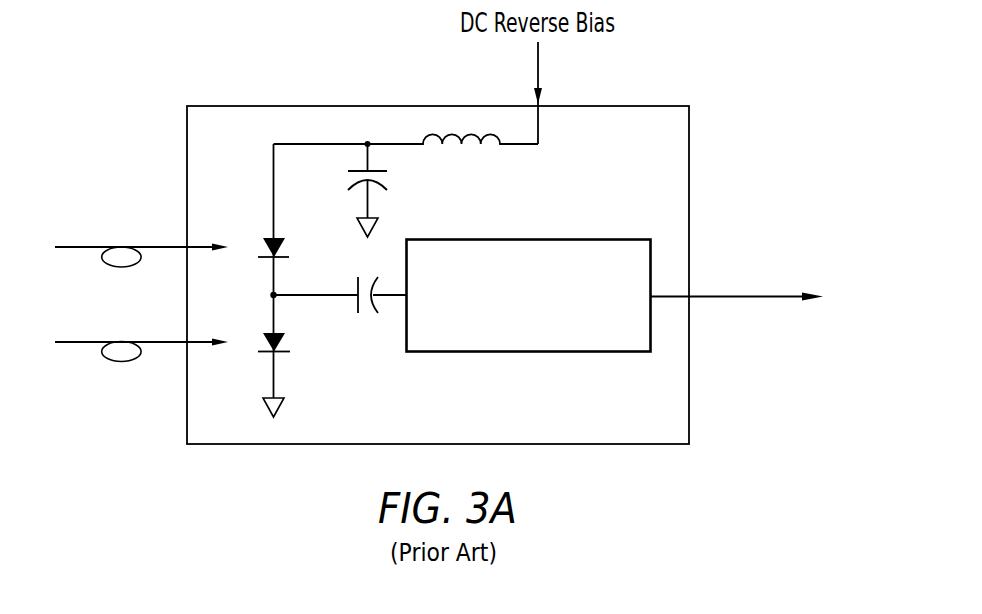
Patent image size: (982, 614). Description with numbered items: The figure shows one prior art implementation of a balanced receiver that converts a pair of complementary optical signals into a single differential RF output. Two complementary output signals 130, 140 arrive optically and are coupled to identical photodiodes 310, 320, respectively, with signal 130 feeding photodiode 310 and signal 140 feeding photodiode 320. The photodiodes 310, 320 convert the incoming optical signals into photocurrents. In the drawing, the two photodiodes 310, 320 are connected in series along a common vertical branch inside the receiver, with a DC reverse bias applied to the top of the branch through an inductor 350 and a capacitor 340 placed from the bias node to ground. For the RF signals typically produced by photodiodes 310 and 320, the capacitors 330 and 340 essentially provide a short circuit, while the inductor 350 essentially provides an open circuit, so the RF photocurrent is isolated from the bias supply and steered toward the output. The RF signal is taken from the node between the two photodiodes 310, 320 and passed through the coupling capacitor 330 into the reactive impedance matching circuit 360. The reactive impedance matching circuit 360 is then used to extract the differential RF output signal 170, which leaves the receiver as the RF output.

The complementary output signal 130 is at (73, 247).
The complementary output signal 140 is at (73, 342).
The differential RF output signal 170 is at (746, 295).
The photodiode 310 is at (267, 241).
The photodiode 320 is at (284, 334).
The capacitor 330 is at (358, 278).
The capacitor 340 is at (383, 169).
The inductor 350 is at (487, 146).
The reactive impedance matching circuit 360 is at (605, 353).